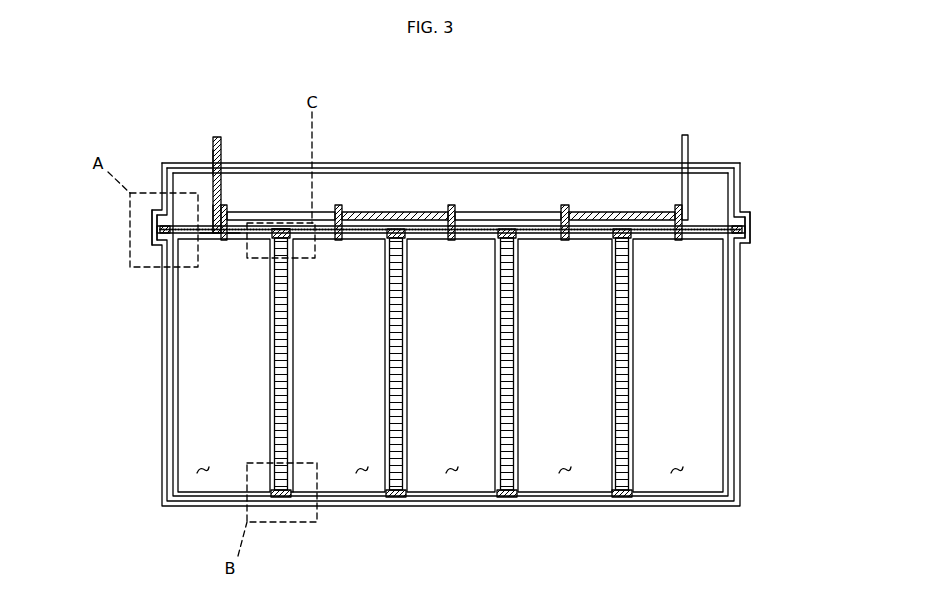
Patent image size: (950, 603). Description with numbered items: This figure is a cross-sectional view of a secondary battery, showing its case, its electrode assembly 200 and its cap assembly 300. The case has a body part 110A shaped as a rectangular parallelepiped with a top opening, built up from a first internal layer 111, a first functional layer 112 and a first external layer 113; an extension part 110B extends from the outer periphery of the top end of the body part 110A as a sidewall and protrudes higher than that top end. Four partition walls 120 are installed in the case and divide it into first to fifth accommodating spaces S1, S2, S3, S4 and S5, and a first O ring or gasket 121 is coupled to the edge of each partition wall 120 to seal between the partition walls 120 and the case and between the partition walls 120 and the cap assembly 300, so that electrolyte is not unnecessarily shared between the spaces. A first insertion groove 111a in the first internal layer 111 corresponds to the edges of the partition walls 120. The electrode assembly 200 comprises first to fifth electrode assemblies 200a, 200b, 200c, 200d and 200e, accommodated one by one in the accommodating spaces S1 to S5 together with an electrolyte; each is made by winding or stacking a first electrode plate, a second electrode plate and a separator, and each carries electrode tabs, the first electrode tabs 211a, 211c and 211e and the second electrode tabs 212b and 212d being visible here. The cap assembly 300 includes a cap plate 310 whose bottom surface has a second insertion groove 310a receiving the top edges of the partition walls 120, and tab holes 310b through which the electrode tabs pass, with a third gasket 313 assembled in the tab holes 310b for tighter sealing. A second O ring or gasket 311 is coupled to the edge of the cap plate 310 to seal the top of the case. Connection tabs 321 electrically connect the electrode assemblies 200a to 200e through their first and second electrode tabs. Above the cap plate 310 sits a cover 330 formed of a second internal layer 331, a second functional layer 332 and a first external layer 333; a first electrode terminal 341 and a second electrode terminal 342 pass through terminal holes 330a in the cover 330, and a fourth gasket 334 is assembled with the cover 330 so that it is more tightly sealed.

The cap assembly 300 is at (409, 285).
The cover 330 is at (451, 118).
The second internal layer 331 is at (495, 165).
The second functional layer 332 is at (516, 168).
The first external layer 333 is at (467, 94).
The terminal holes 330a is at (222, 152).
The first electrode terminal 341 is at (216, 137).
The second electrode terminal 342 is at (686, 135).
The fourth gasket 334 is at (213, 215).
The first electrode tab 211a is at (231, 210).
The second electrode tab 212b is at (338, 205).
The first electrode tab 211c is at (452, 205).
The second electrode tab 212d is at (565, 203).
The first electrode tab 211e is at (678, 203).
The connection tabs 321 is at (290, 212).
The cap plate 310 is at (714, 226).
The second insertion groove 310a is at (283, 240).
The tab holes 310b is at (222, 237).
The second O ring or gasket 311 is at (158, 234).
The third gasket 313 is at (234, 243).
The body part 110A is at (387, 334).
The extension part 110B is at (152, 221).
The first internal layer 111 is at (173, 350).
The first insertion groove 111a is at (296, 493).
The first functional layer 112 is at (168, 380).
The first external layer 113 is at (164, 410).
The partition walls 120 is at (433, 403).
The first O ring or gasket 121 is at (270, 240).
The electrode assembly 200 is at (404, 365).
The first electrode assembly 200a is at (224, 365).
The second electrode assembly 200b is at (339, 365).
The third electrode assembly 200c is at (451, 365).
The fourth electrode assembly 200d is at (565, 365).
The fifth electrode assembly 200e is at (678, 365).
The first accommodating space S1 is at (201, 478).
The second accommodating space S2 is at (360, 478).
The third accommodating space S3 is at (450, 478).
The fourth accommodating space S4 is at (563, 478).
The fifth accommodating space S5 is at (675, 478).